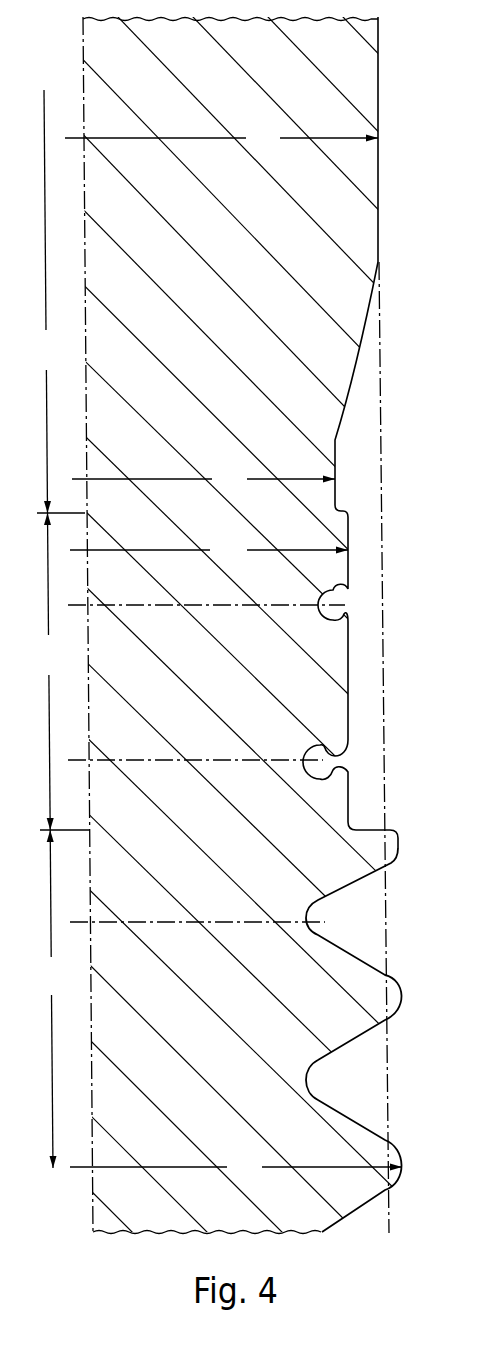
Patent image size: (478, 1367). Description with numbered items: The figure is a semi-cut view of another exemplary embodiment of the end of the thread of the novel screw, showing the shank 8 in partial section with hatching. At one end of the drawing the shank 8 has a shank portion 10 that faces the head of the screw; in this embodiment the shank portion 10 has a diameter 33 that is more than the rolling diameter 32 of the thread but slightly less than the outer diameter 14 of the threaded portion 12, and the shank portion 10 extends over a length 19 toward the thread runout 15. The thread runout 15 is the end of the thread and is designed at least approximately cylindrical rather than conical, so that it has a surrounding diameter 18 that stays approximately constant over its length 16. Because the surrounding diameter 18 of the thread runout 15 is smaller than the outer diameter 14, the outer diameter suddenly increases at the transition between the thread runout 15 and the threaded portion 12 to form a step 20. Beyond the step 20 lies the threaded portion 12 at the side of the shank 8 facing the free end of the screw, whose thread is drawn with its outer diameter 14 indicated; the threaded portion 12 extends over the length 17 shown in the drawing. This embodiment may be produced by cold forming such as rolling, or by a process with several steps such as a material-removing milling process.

The shank 8 is at (380, 158).
The shank portion 10 is at (318, 90).
The threaded portion 12 is at (392, 1075).
The outer diameter 14 is at (236, 1165).
The thread runout 15 is at (386, 640).
The length 16 is at (63, 671).
The length 17 is at (50, 999).
The surrounding diameter 18 is at (209, 549).
The length 19 is at (61, 301).
The step 20 is at (368, 828).
The rolling diameter 32 is at (203, 479).
The diameter 33 is at (221, 139).